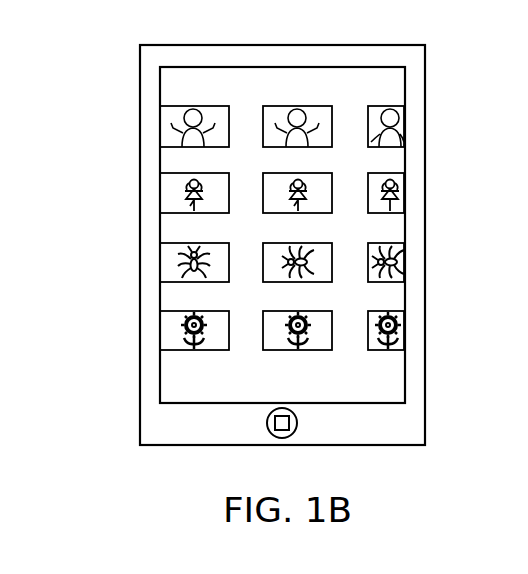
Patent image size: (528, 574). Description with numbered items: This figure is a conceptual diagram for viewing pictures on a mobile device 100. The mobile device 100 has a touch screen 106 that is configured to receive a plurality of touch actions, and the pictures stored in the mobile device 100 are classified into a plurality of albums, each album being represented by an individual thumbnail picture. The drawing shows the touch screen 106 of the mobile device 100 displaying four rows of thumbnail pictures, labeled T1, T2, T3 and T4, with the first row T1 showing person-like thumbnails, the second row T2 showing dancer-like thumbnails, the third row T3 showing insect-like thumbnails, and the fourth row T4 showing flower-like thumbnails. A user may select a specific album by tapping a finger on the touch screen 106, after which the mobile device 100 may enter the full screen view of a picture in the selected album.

The mobile device 100 is at (415, 44).
The touch screen 106 is at (405, 82).
The first tile row (person icons) T1 is at (217, 103).
The second tile row (dancer icons) T2 is at (217, 171).
The third tile row (insect icons) T3 is at (217, 241).
The fourth tile row (flower icons) T4 is at (217, 309).